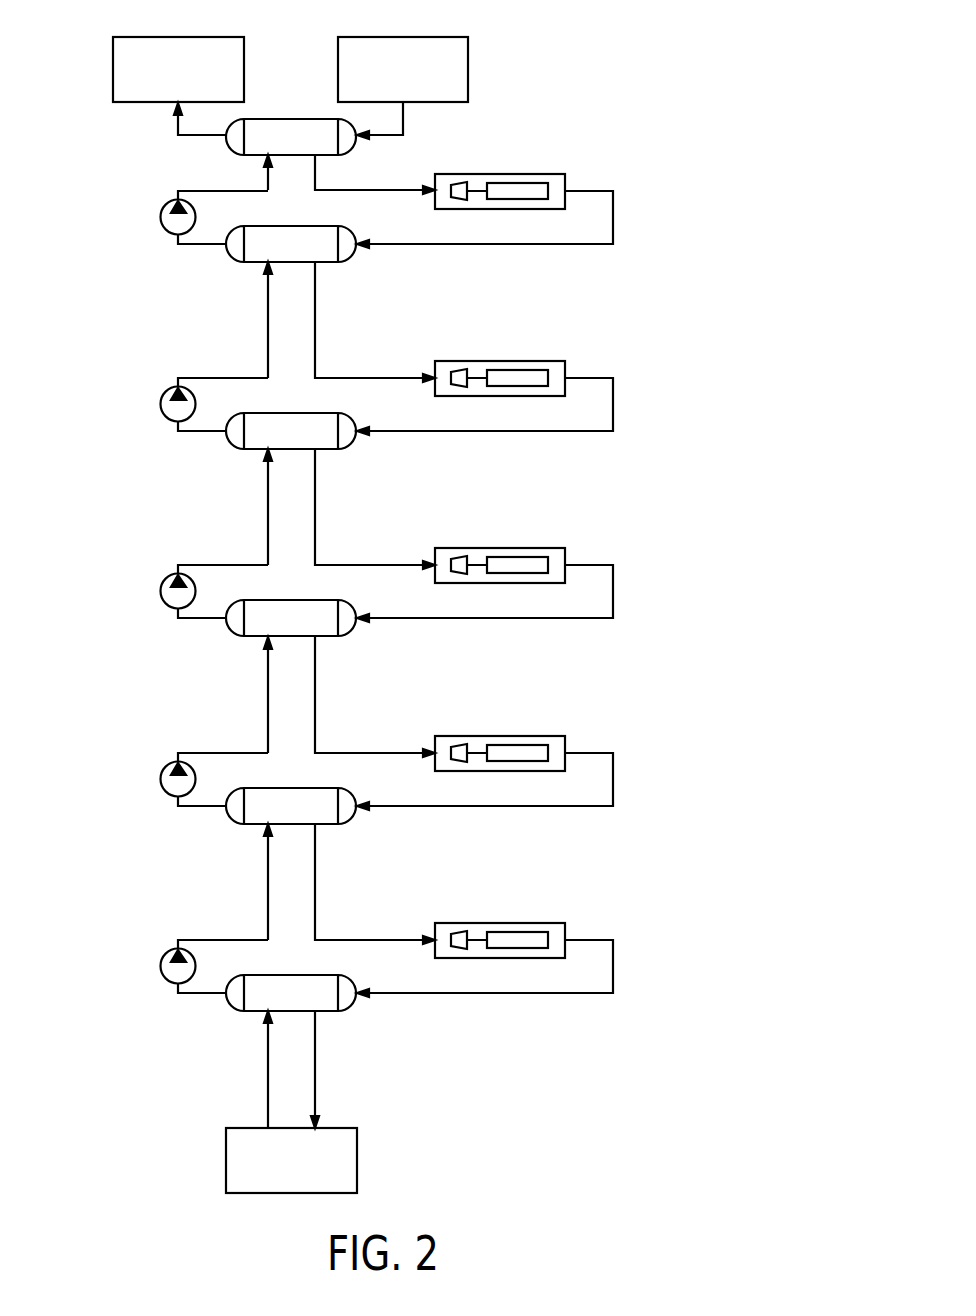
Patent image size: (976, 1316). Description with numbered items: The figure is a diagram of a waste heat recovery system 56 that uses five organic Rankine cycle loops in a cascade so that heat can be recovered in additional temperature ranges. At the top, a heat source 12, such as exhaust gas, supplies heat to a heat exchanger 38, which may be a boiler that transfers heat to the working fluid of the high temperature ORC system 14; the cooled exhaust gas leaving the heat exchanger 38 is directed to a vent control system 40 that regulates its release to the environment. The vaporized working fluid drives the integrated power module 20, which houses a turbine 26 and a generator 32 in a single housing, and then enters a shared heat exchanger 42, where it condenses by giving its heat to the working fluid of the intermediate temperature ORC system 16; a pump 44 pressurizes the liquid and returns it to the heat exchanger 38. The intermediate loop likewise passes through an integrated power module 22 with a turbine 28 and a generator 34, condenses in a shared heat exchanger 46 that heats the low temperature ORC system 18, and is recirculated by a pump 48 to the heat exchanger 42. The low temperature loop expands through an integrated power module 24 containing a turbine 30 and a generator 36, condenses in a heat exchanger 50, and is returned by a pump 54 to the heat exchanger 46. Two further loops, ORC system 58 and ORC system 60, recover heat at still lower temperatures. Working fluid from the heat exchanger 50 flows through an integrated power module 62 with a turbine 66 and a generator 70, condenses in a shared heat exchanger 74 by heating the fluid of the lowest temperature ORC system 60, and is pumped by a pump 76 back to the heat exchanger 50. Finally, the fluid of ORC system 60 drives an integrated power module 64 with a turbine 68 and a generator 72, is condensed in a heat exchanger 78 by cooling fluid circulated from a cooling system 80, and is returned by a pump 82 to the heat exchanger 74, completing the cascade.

The heat source 12 is at (468, 70).
The high temperature ORC system 14 is at (532, 216).
The intermediate temperature ORC system 16 is at (532, 403).
The low temperature ORC system 18 is at (532, 590).
The integrated power module 20 is at (522, 168).
The integrated power module 22 is at (522, 355).
The integrated power module 24 is at (522, 542).
The turbine 26 is at (463, 164).
The turbine 28 is at (463, 351).
The turbine 30 is at (463, 538).
The generator 32 is at (517, 163).
The generator 34 is at (517, 350).
The generator 36 is at (517, 537).
The heat exchanger 38 is at (287, 119).
The vent control system 40 is at (113, 70).
The heat exchanger 42 is at (291, 218).
The pump 44 is at (187, 212).
The heat exchanger 46 is at (291, 405).
The pump 48 is at (187, 399).
The heat exchanger 50 is at (291, 592).
The pump 54 is at (187, 586).
The waste heat recovery system 56 is at (582, 33).
The ORC system 58 is at (532, 778).
The ORC system 60 is at (532, 965).
The integrated power module 62 is at (522, 730).
The integrated power module 64 is at (522, 917).
The turbine 66 is at (463, 726).
The turbine 68 is at (463, 913).
The generator 70 is at (517, 725).
The generator 72 is at (517, 912).
The heat exchanger 74 is at (291, 780).
The pump 76 is at (187, 774).
The heat exchanger 78 is at (291, 967).
The cooling system 80 is at (357, 1161).
The pump 82 is at (187, 961).